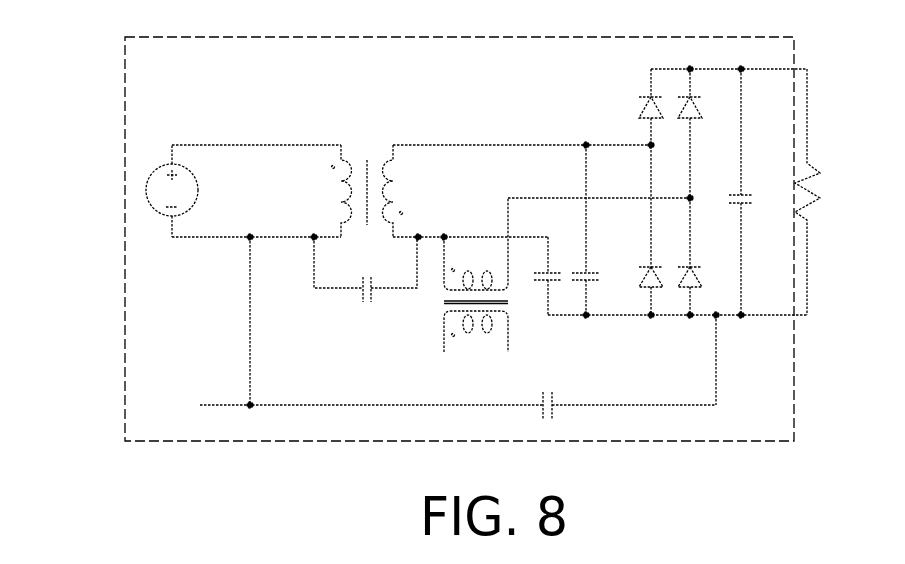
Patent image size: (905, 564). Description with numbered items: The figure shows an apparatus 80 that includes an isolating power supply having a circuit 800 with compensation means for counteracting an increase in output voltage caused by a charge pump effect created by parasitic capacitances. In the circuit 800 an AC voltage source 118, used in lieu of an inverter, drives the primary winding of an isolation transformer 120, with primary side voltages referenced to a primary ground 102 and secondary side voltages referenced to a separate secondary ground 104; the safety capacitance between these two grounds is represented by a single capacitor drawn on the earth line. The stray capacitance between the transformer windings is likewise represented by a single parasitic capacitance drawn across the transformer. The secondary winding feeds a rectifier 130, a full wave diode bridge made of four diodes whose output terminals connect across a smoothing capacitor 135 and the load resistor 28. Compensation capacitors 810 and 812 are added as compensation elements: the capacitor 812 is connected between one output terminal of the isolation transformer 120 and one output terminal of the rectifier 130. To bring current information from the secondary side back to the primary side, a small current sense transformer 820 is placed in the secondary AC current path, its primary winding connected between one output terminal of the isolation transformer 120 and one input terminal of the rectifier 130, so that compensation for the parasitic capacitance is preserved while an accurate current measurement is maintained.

The apparatus 80 is at (838, 23).
The circuit 800 is at (794, 325).
The AC voltage source 118 is at (156, 172).
The isolation transformer 120 is at (367, 140).
The primary ground 102 is at (438, 336).
The current sense transformer 820 is at (428, 304).
The compensation capacitor 812 is at (537, 276).
The compensation capacitor 810 is at (600, 230).
The rectifier 130 is at (620, 97).
The smoothing capacitor 135 is at (751, 213).
The load resistor Rload 28 is at (824, 224).
The secondary ground 104 is at (677, 353).